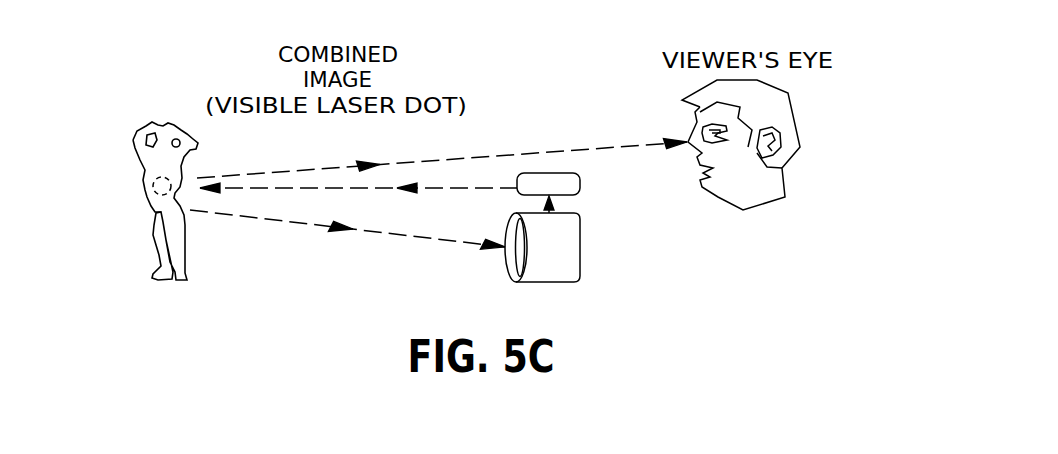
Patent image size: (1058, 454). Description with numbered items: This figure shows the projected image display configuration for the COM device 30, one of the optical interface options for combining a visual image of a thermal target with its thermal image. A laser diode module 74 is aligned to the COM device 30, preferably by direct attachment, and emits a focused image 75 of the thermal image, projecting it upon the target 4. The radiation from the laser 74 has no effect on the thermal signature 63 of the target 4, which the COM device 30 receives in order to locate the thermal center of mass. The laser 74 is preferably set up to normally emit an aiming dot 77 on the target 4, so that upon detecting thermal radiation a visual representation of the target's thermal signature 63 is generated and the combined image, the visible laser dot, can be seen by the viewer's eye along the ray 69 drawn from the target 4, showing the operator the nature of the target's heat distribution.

The target 4 is at (102, 220).
The COM device 30 is at (563, 264).
The thermal signature 63 is at (337, 231).
The visible image light to viewer's eye 69 is at (531, 150).
The laser diode module 74 is at (517, 194).
The focused image 75 is at (365, 188).
The aiming dot 77 is at (143, 174).